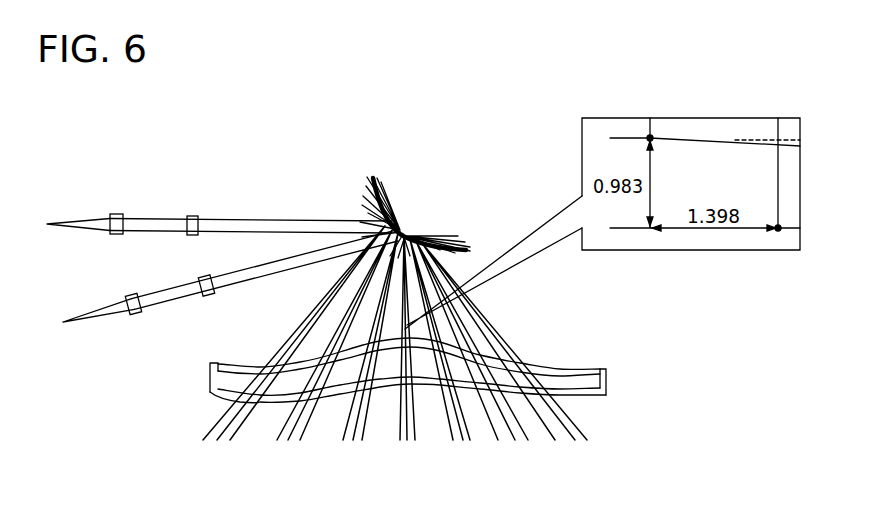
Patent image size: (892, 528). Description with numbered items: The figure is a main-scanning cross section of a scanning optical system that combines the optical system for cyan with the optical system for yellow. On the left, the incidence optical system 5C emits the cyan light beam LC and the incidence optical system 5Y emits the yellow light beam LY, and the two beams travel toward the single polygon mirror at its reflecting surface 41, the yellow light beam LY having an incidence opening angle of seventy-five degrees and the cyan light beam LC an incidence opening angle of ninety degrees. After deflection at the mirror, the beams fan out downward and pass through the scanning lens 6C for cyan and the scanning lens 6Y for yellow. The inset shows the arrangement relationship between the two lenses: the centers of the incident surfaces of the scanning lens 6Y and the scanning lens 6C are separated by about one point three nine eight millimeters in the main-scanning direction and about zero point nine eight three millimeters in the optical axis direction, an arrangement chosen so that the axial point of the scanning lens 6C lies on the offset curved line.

The incidence optical system for cyan 5C is at (137, 207).
The incidence optical system for yellow 5Y is at (145, 286).
The cyan light beam LC is at (248, 218).
The yellow light beam LY is at (243, 287).
The reflecting mirror surface of polygon mirror (4) 41 is at (450, 247).
The scanning lens for cyan 6C is at (606, 371).
The scanning lens for yellow 6Y is at (606, 392).